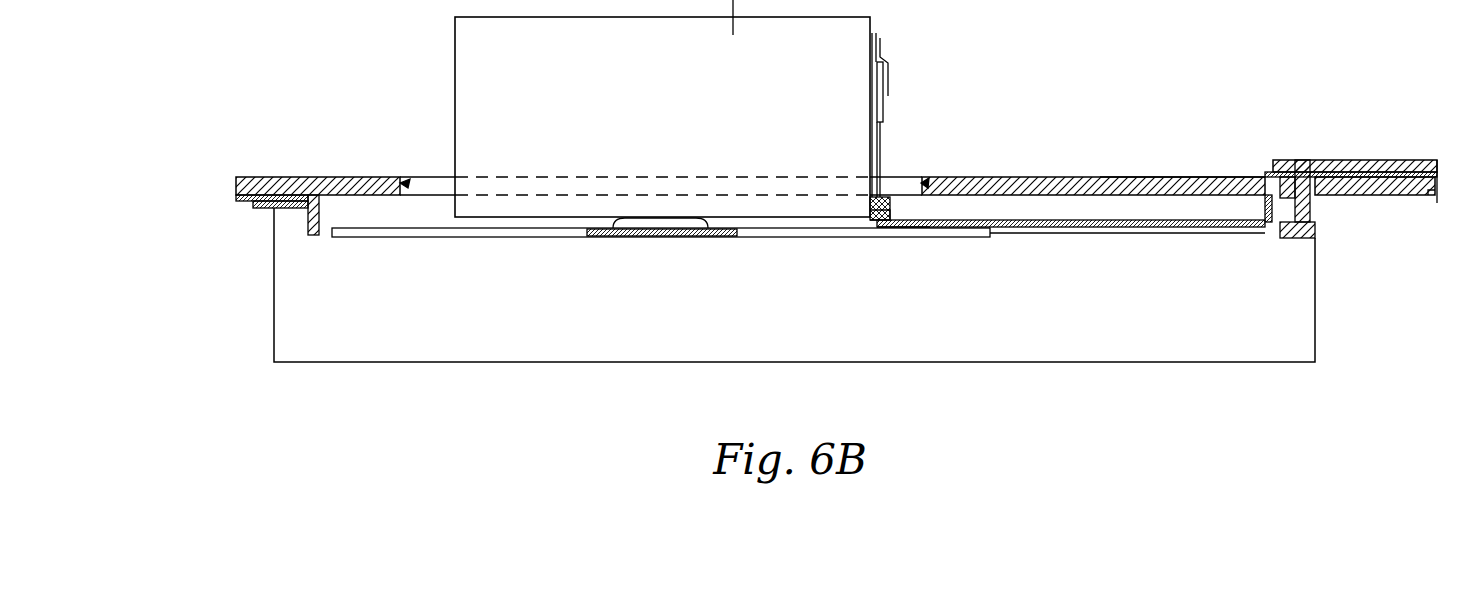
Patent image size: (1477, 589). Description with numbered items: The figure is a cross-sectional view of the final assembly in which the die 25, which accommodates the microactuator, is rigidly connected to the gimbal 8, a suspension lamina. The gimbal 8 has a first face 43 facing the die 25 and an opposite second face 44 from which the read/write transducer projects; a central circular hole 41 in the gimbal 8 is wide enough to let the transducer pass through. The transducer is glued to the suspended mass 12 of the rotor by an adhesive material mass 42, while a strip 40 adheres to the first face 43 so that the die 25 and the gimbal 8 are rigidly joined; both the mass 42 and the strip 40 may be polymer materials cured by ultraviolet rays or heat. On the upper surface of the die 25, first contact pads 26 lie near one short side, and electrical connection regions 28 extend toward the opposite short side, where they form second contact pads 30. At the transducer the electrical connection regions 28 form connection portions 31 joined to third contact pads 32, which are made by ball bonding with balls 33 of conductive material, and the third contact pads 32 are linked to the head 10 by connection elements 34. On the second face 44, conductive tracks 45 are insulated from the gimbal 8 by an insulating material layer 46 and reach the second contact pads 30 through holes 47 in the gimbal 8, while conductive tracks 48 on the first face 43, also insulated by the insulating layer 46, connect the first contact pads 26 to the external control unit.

The gimbal 8 is at (293, 178).
The head 10 is at (890, 97).
The suspended mass 12 is at (688, 238).
The die 25 is at (1095, 338).
The first contact pads 26 is at (290, 222).
The electrical connection regions 28 is at (1026, 228).
The second contact pads 30 is at (1315, 230).
The connection portions 31 is at (905, 228).
The third contact pads 32 is at (868, 210).
The balls 33 is at (887, 207).
The connection elements 34 is at (882, 147).
The strip 40 is at (370, 212).
The central circular hole 41 is at (406, 183).
The adhesive material mass 42 is at (637, 238).
The first face 43 is at (1410, 197).
The second face 44 is at (1159, 176).
The conductive tracks 45 is at (1383, 161).
The insulating material layer 46 is at (236, 198).
The holes 47 is at (1297, 166).
The conductive tracks 48 is at (258, 208).